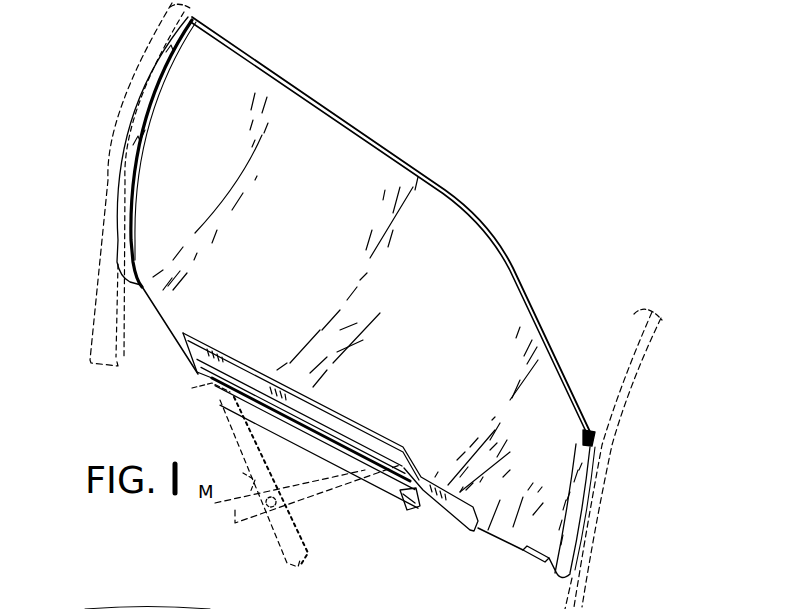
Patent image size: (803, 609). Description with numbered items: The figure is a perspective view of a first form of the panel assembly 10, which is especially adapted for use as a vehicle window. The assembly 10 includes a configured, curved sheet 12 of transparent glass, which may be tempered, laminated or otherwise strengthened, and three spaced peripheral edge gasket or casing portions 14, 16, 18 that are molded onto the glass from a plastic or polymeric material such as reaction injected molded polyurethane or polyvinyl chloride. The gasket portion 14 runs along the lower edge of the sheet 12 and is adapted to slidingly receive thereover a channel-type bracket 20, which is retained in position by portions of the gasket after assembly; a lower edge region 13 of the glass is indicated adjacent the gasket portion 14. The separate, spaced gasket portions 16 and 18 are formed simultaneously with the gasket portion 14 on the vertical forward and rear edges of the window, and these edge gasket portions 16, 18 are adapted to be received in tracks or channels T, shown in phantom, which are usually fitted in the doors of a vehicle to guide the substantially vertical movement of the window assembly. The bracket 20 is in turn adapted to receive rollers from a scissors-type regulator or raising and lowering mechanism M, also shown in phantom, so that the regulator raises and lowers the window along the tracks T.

The panel assembly 10 is at (563, 270).
The sheet 12 is at (287, 290).
The lower edge of glass pane 13 is at (160, 316).
The gasket portion 14 is at (335, 415).
The gasket portion 16 is at (132, 168).
The gasket portion 18 is at (575, 447).
The channel-type bracket 20 is at (368, 490).
The tracks or channels T is at (131, 97).
The regulator mechanism M is at (296, 475).